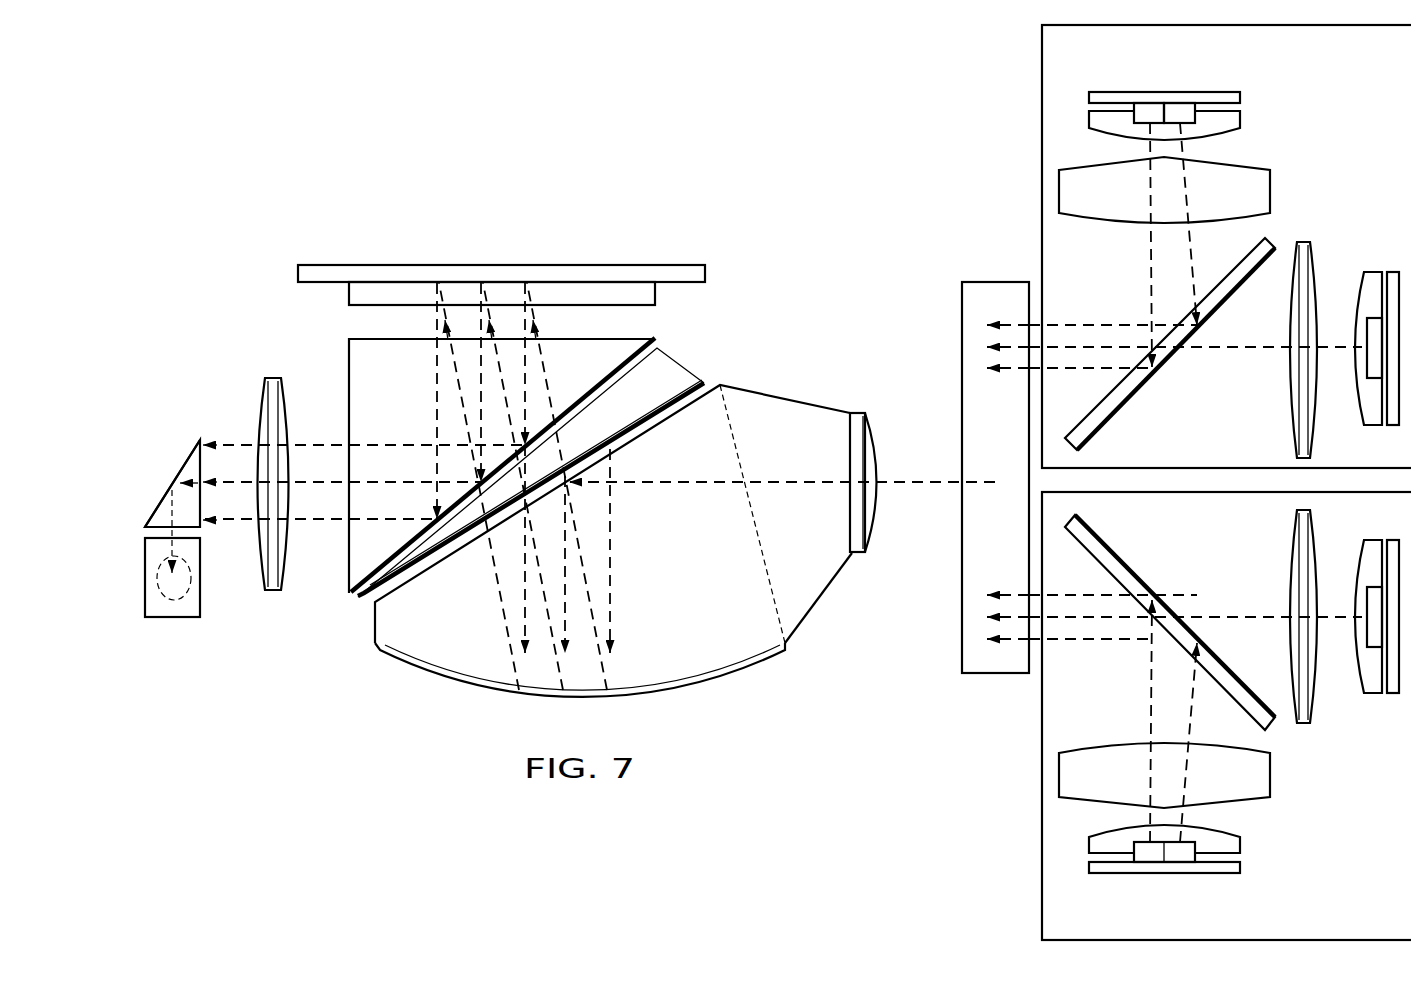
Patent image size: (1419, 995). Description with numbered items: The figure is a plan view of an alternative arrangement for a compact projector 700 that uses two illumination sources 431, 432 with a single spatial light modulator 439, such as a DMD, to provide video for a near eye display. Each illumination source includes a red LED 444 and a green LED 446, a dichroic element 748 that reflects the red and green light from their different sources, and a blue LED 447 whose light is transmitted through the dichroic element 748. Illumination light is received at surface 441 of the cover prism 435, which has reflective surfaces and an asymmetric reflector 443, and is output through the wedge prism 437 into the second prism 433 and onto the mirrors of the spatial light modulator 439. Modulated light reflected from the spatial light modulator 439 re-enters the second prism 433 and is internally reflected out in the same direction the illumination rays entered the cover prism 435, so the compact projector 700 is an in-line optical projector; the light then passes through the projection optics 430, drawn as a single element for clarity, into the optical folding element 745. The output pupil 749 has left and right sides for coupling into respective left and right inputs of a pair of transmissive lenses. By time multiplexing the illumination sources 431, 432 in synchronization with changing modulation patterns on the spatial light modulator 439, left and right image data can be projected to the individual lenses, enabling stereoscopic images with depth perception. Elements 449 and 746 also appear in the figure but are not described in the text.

The compact projector 700 is at (246, 149).
The projection optics 430 is at (272, 592).
The illumination source 431 is at (1030, 135).
The illumination source 432 is at (1030, 828).
The second prism 433 is at (345, 358).
The cover prism 435 is at (376, 622).
The wedge prism 437 is at (683, 368).
The spatial light modulator 439 is at (296, 272).
The surface 441 is at (880, 455).
The asymmetric reflector 443 is at (445, 690).
The red LED 444 is at (1141, 110).
The green LED 446 is at (1183, 110).
The blue LED 447 is at (1370, 325).
The collimating lens 449 is at (1270, 192).
The optical folding element 745 is at (151, 435).
The reflective surface 746 is at (152, 505).
The dichroic element 748 is at (143, 598).
The output pupil 749 is at (152, 572).